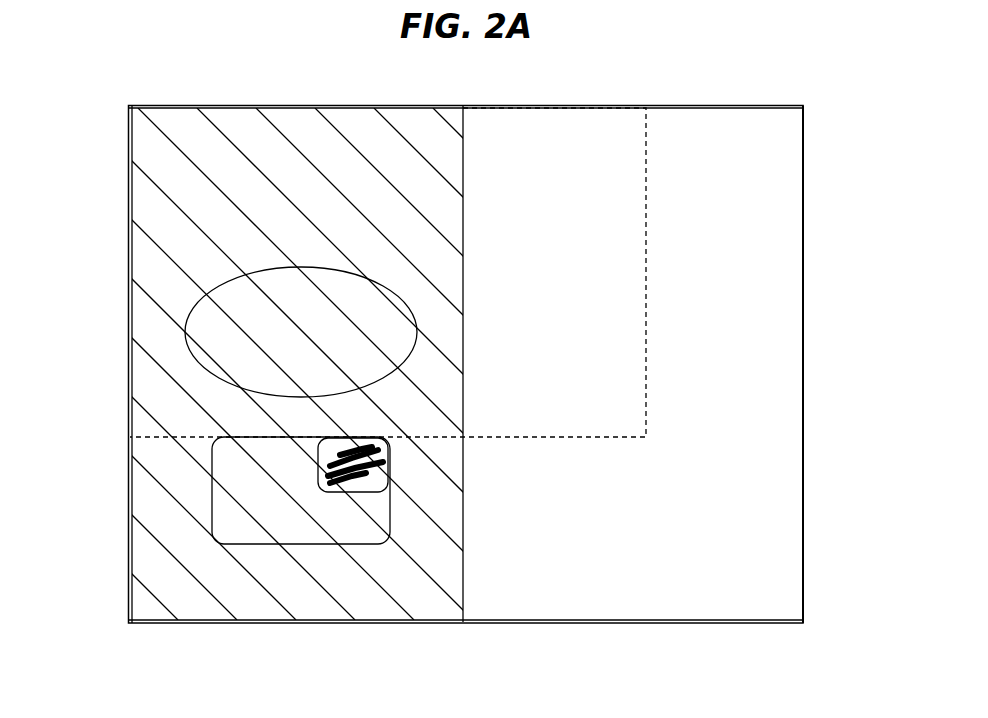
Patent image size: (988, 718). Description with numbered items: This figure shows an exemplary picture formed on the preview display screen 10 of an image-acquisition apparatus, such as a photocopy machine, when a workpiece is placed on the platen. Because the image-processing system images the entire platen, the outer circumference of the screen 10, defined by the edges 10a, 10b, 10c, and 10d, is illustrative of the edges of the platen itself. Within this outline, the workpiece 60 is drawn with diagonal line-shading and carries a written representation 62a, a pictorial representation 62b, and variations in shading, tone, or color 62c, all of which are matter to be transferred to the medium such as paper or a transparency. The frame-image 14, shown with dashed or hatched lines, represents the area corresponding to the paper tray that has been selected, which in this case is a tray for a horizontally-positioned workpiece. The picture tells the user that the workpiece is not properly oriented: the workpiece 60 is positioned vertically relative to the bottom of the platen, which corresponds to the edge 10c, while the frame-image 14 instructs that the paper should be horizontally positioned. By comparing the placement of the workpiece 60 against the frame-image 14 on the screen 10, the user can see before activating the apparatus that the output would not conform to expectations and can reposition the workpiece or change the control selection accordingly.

The preview display screen 10 is at (490, 104).
The edge of preview display screen 10a is at (617, 101).
The edge of preview display screen 10b is at (809, 374).
The edge of preview display screen 10c is at (586, 630).
The edge of preview display screen 10d is at (123, 470).
The frame-image 14 is at (659, 320).
The workpiece 60 is at (217, 596).
The written representation 62a is at (152, 190).
The pictorial representation 62b is at (176, 326).
The variations in shading, tone, or color 62c is at (388, 463).